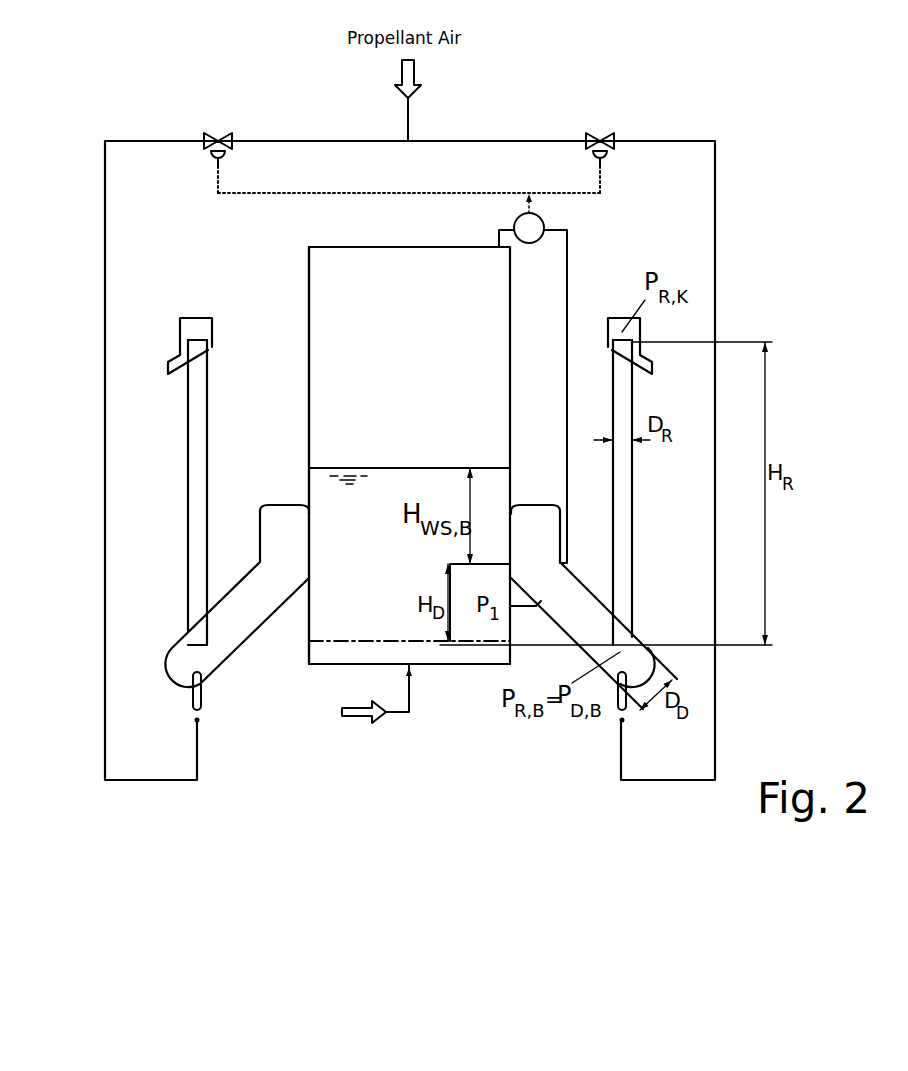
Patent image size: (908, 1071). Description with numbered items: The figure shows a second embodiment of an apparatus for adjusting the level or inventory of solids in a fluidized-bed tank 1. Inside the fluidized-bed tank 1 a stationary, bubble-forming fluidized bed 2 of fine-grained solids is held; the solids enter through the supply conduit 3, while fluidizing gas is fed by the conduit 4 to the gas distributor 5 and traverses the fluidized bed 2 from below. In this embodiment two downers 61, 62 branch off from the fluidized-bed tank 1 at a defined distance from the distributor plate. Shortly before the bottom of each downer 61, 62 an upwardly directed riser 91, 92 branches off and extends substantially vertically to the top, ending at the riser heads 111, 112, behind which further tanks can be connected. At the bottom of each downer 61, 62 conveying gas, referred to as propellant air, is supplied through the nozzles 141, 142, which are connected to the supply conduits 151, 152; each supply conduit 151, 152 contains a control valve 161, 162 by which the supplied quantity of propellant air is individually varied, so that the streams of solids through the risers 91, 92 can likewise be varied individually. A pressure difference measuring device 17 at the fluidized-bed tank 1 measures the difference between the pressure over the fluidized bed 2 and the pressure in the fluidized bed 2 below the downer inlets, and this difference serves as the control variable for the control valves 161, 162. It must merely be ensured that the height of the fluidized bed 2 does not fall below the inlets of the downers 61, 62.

The fluidized-bed tank 1 is at (308, 272).
The fluidized bed 2 is at (372, 493).
The supply conduit 3 is at (308, 447).
The conduit 4 is at (397, 720).
The gas distributor 5 is at (453, 658).
The downer 61 is at (572, 592).
The downer 62 is at (253, 588).
The riser 91 is at (625, 516).
The riser 92 is at (198, 486).
The riser head 111 is at (620, 340).
The riser head 112 is at (192, 345).
The nozzle 141 is at (618, 705).
The nozzle 142 is at (202, 700).
The supply conduit 151 is at (718, 238).
The supply conduit 152 is at (104, 240).
The control valve 161 is at (605, 138).
The control valve 162 is at (210, 138).
The pressure difference measuring device 17 is at (547, 222).